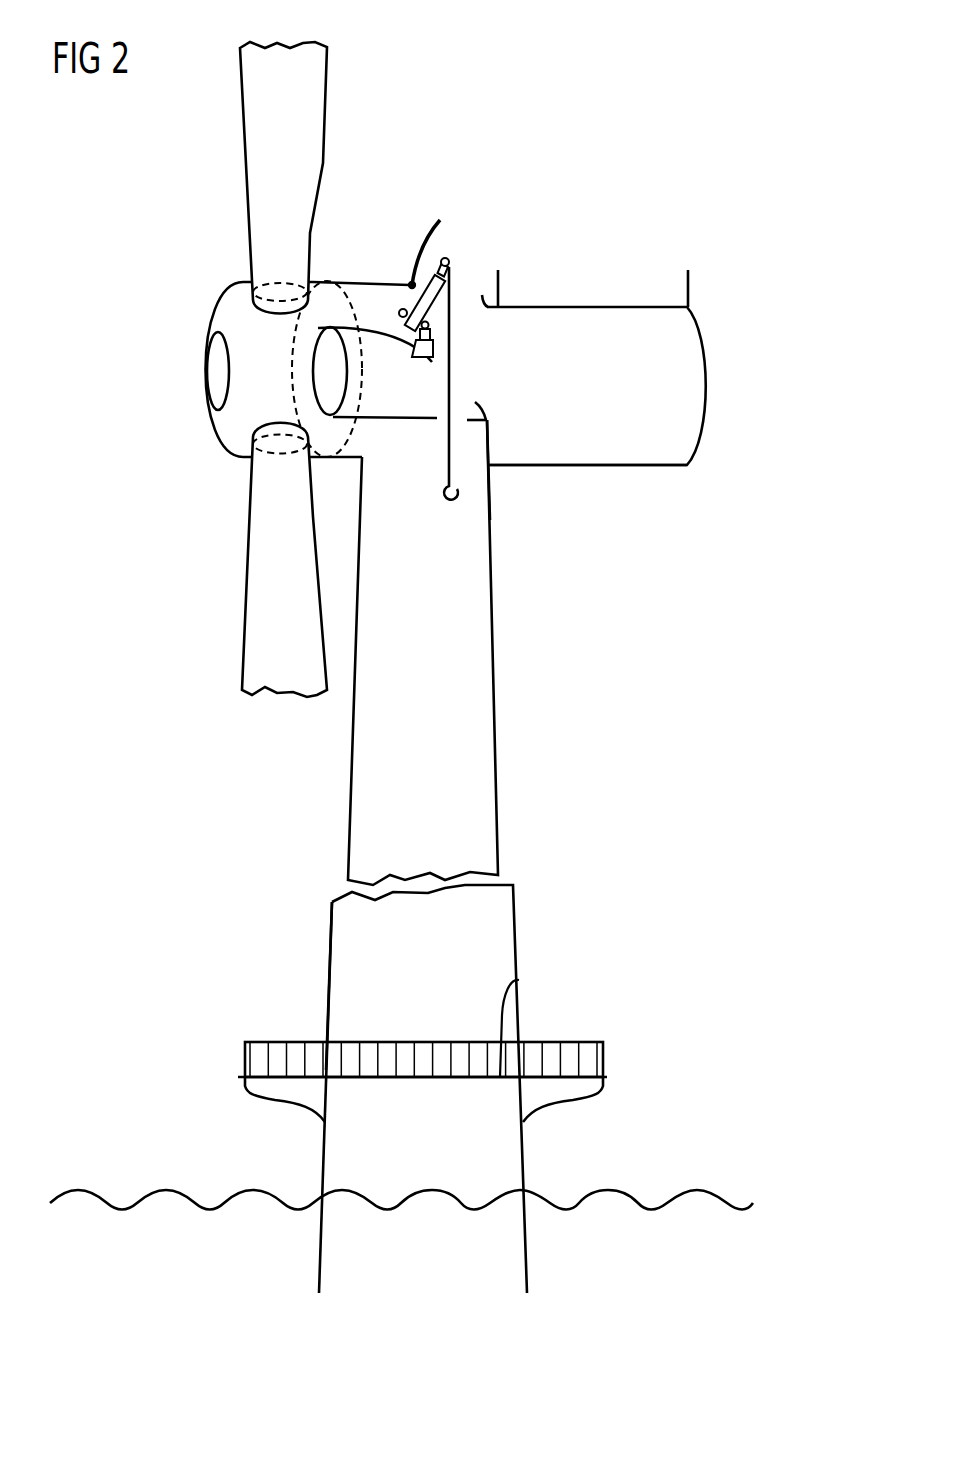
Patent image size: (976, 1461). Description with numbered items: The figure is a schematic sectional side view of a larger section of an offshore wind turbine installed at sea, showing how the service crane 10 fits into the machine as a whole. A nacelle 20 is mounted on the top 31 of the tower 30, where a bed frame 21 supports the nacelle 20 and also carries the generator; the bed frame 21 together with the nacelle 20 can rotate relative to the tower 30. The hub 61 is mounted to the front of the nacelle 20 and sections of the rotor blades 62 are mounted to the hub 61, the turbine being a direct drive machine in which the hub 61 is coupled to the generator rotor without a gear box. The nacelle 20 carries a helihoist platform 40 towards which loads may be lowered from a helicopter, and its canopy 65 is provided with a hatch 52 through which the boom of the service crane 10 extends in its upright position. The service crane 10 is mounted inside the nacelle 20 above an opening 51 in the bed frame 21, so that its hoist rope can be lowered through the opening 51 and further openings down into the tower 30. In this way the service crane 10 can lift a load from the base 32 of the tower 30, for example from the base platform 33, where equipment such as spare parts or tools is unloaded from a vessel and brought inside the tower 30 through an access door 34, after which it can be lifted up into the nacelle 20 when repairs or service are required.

The service crane 10 is at (458, 246).
The nacelle 20 is at (718, 307).
The bed frame 21 is at (378, 335).
The tower 30 is at (477, 568).
The top of tower 31 is at (488, 443).
The base of tower 32 is at (338, 1002).
The base platform 33 is at (604, 1062).
The access door 34 is at (509, 1017).
The helihoist platform 40 is at (600, 307).
The opening in bed frame 51 is at (460, 392).
The hatch 52 is at (417, 252).
The hub 61 is at (232, 307).
The rotor blades 62 is at (253, 604).
The canopy 65 is at (615, 468).